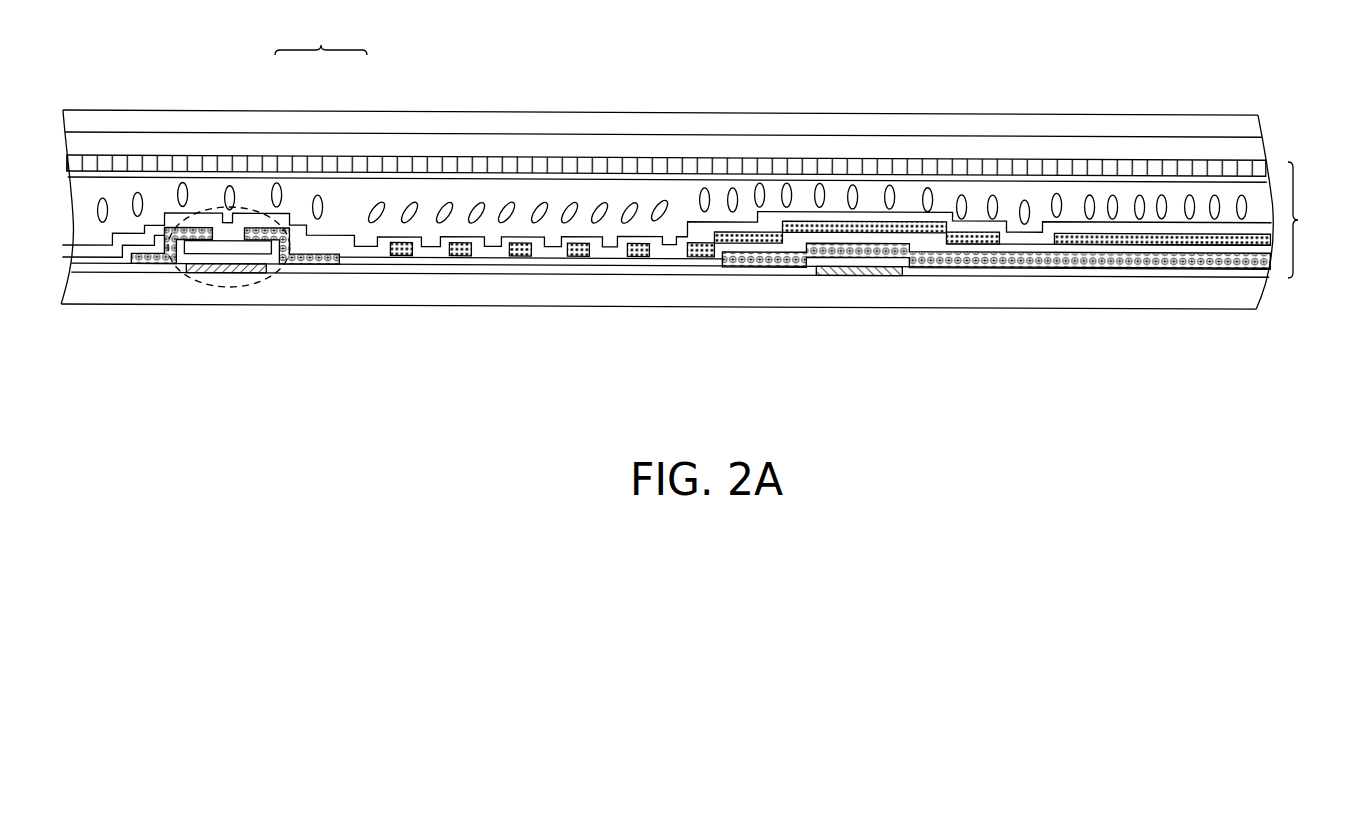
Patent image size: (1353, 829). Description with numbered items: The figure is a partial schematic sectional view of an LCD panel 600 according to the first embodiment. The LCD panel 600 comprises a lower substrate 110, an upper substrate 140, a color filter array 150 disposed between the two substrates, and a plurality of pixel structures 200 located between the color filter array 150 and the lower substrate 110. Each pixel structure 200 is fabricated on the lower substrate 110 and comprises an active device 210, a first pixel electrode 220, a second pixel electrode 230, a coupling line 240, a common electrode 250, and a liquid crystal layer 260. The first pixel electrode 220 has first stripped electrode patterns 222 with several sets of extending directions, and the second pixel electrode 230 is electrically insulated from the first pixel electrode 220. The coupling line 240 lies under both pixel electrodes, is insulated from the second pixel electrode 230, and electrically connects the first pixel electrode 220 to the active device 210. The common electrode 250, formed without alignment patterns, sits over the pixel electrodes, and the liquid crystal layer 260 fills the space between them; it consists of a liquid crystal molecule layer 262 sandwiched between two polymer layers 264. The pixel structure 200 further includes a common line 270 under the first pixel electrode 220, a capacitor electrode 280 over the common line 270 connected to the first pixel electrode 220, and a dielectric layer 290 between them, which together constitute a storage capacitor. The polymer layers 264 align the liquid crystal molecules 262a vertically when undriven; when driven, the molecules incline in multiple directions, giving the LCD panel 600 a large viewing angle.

The lower substrate 110 is at (84, 292).
The upper substrate 140 is at (222, 120).
The color filter array 150 is at (176, 150).
The pixel structure 200 is at (1315, 220).
The active device 210 is at (229, 300).
The first pixel electrode 220 is at (775, 228).
The first stripped electrode patterns 222 is at (580, 250).
The second pixel electrode 230 is at (1127, 240).
The coupling line 240 is at (967, 265).
The common electrode 250 is at (575, 168).
The liquid crystal layer 260 is at (321, 34).
The liquid crystal molecule layer 262 is at (298, 195).
The liquid crystal molecules 262a is at (470, 210).
The polymer layers 264 is at (357, 178).
The common line 270 is at (878, 276).
The capacitor electrode 280 is at (862, 247).
The dielectric layer 290 is at (785, 273).
The LCD panel 600 is at (1240, 452).